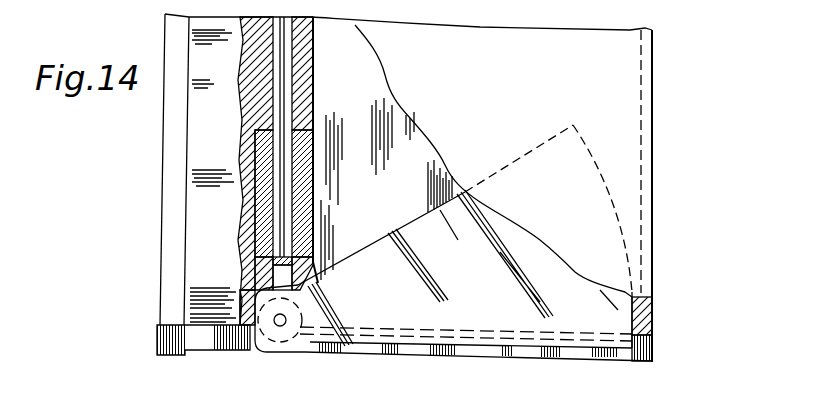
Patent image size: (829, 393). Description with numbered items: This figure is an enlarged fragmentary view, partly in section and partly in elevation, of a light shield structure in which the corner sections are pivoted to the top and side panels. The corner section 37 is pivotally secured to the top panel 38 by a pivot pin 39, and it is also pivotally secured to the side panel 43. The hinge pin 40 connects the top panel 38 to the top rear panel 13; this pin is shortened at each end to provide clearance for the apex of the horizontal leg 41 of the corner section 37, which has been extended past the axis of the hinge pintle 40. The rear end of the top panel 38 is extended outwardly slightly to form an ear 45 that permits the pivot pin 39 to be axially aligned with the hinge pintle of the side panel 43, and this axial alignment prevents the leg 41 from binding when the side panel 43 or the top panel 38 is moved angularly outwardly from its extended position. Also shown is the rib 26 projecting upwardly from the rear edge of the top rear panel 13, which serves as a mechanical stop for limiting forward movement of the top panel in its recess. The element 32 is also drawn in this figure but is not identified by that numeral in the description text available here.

The top rear panel 13 is at (210, 117).
The rib 26 is at (166, 197).
The base plate 32 is at (160, 352).
The corner section 37 is at (437, 190).
The top panel 38 is at (628, 97).
The pivot pin 39 is at (286, 317).
The hinge pin 40 is at (298, 77).
The horizontal leg 41 is at (383, 246).
The side panel 43 is at (652, 352).
The ear 45 is at (290, 353).